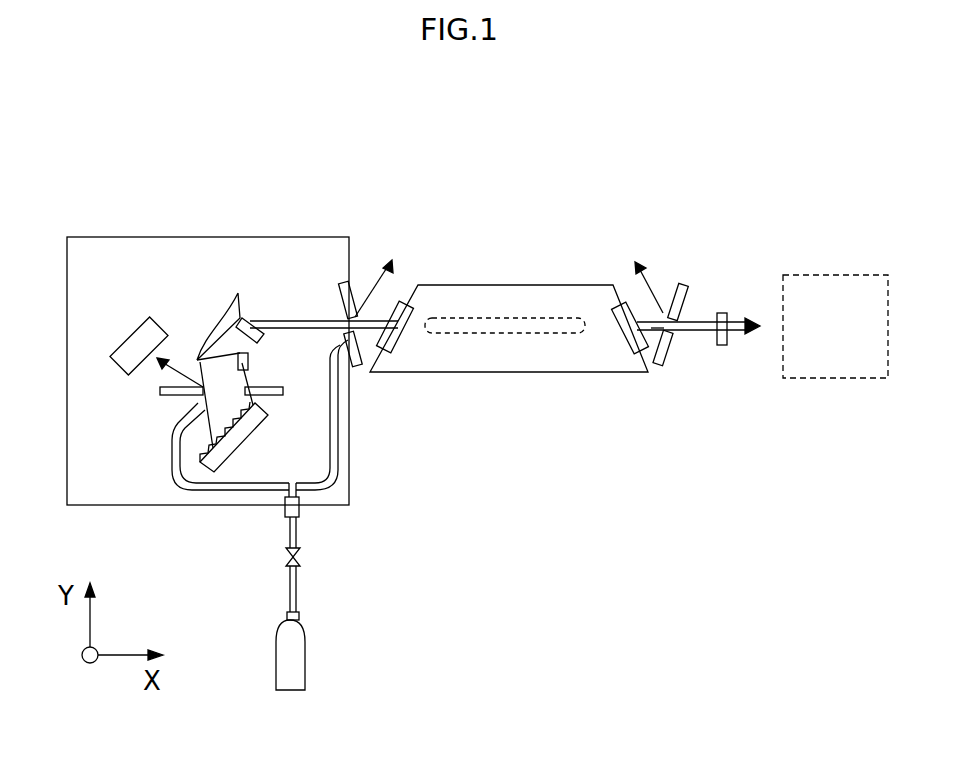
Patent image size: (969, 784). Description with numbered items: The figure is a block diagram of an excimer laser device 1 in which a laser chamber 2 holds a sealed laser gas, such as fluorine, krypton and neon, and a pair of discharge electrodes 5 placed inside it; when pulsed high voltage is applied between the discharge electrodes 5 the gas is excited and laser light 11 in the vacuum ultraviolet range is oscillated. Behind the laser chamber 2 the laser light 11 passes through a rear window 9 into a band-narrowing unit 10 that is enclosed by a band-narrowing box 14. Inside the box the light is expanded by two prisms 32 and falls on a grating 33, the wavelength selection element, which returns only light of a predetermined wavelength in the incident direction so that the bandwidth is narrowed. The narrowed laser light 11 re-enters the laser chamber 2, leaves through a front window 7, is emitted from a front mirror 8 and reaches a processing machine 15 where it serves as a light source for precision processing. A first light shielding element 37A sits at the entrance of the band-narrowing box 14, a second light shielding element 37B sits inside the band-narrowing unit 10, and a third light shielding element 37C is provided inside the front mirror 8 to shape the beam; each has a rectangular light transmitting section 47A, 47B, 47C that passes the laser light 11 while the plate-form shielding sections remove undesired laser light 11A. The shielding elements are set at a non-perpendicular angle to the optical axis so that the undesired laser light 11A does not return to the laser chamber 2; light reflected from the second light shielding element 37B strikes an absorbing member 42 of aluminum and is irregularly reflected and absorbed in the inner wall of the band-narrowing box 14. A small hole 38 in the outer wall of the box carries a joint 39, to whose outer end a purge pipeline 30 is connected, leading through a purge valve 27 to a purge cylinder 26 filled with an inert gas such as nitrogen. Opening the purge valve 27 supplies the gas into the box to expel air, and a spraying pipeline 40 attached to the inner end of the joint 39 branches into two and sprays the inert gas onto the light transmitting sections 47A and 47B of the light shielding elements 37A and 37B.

The excimer laser device 1 is at (684, 192).
The laser chamber 2 is at (538, 285).
The discharge electrodes 5 is at (494, 333).
The front window 7 is at (628, 338).
The front mirror 8 is at (722, 313).
The rear window 9 is at (398, 372).
The band-narrowing unit 10 is at (169, 210).
The laser light 11 is at (305, 320).
The undesired laser light 11A is at (178, 362).
The band-narrowing box 14 is at (243, 237).
The processing machine 15 is at (838, 378).
The purge cylinder 26 is at (305, 657).
The purge valve 27 is at (300, 562).
The purge pipeline 30 is at (284, 540).
The prisms 32 is at (238, 293).
The grating 33 is at (253, 423).
The first light shielding element 37A is at (348, 283).
The second light shielding element 37B is at (170, 396).
The third light shielding element 37C is at (683, 287).
The small hole 38 is at (288, 517).
The joint 39 is at (300, 510).
The spraying pipeline 40 is at (183, 490).
The absorbing member 42 is at (117, 345).
The light transmitting section 47A is at (402, 303).
The light transmitting section 47B is at (225, 393).
The light transmitting section 47C is at (658, 335).